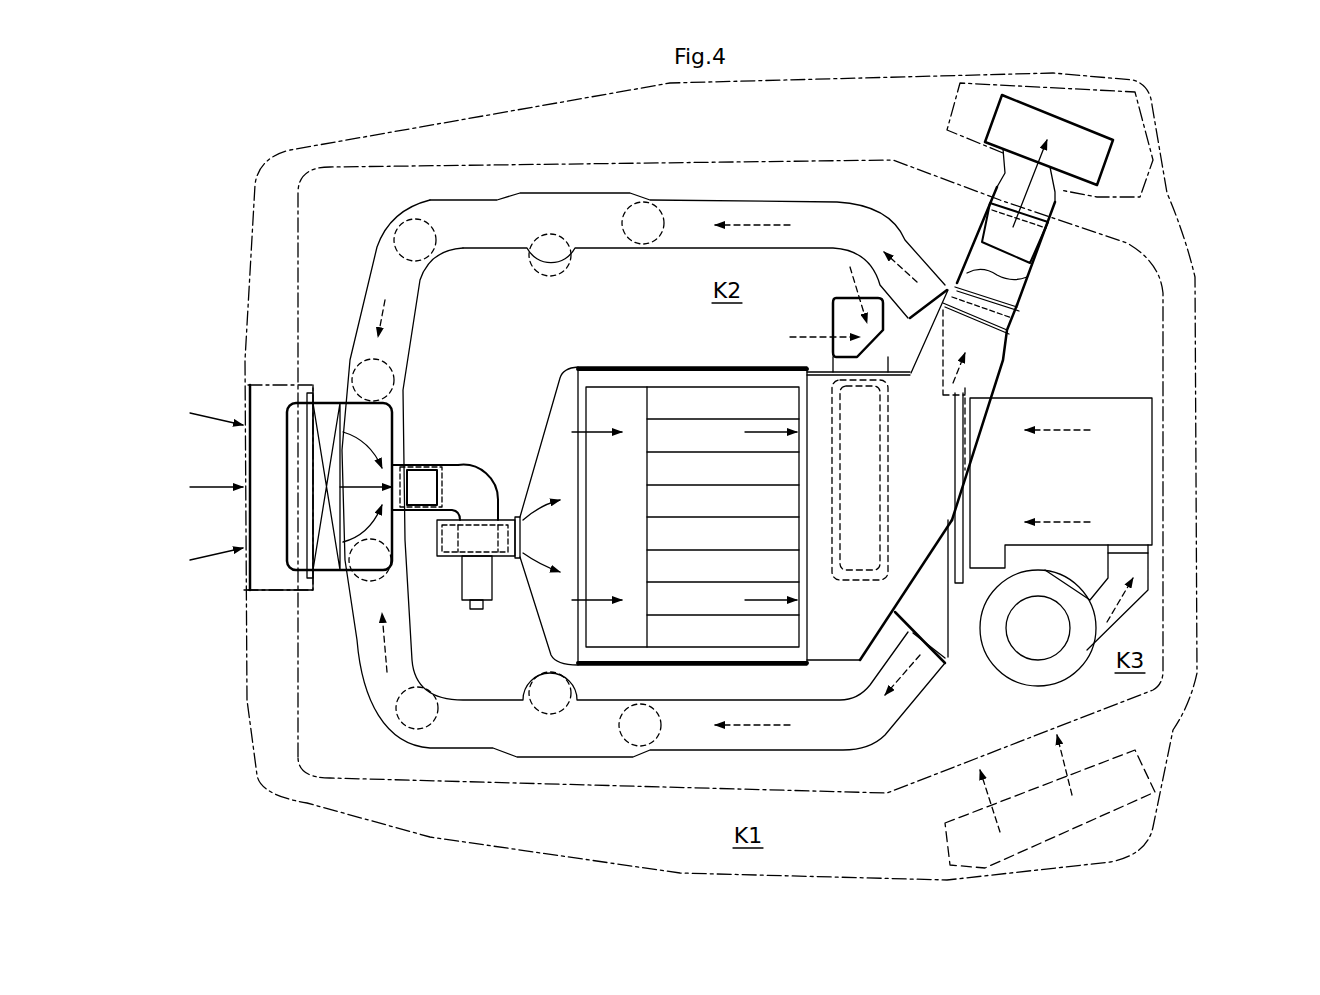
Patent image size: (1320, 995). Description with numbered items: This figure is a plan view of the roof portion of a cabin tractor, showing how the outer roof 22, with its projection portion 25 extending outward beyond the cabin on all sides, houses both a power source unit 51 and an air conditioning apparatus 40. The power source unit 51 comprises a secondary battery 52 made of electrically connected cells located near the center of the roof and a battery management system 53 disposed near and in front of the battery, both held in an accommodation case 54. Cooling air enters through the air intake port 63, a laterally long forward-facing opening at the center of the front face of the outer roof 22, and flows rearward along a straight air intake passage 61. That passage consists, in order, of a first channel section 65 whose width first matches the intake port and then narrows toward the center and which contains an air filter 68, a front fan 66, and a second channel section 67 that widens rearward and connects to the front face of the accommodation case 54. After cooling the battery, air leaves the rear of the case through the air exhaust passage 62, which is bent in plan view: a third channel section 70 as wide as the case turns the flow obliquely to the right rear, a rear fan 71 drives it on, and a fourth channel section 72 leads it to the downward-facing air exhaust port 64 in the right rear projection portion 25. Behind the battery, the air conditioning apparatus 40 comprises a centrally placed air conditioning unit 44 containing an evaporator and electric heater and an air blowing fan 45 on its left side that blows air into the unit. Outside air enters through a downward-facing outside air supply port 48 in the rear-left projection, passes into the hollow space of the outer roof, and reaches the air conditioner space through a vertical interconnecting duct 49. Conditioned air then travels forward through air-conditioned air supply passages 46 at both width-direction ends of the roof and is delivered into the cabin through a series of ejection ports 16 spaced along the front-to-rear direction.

The ejection ports 16 is at (443, 233).
The outer roof 22 is at (1198, 318).
The projection portion 25 is at (1148, 95).
The air conditioning apparatus 40 is at (1158, 468).
The air conditioning unit 44 is at (1128, 398).
The air blowing fan 45 is at (973, 660).
The air-conditioned air supply passages 46 is at (748, 200).
The outside air supply port 48 is at (943, 840).
The interconnecting duct 49 is at (833, 318).
The power source unit 51 is at (673, 386).
The secondary battery 52 is at (712, 643).
The battery management system 53 is at (598, 627).
The accommodation case 54 is at (622, 365).
The air intake passage 61 is at (493, 470).
The air exhaust passage 62 is at (968, 250).
The air intake port 63 is at (247, 397).
The air exhaust port 64 is at (943, 103).
The first channel section 65 is at (334, 392).
The front fan 66 is at (447, 558).
The second channel section 67 is at (523, 394).
The air filter 68 is at (322, 538).
The third channel section 70 is at (980, 443).
The rear fan 71 is at (1010, 327).
The fourth channel section 72 is at (1063, 212).